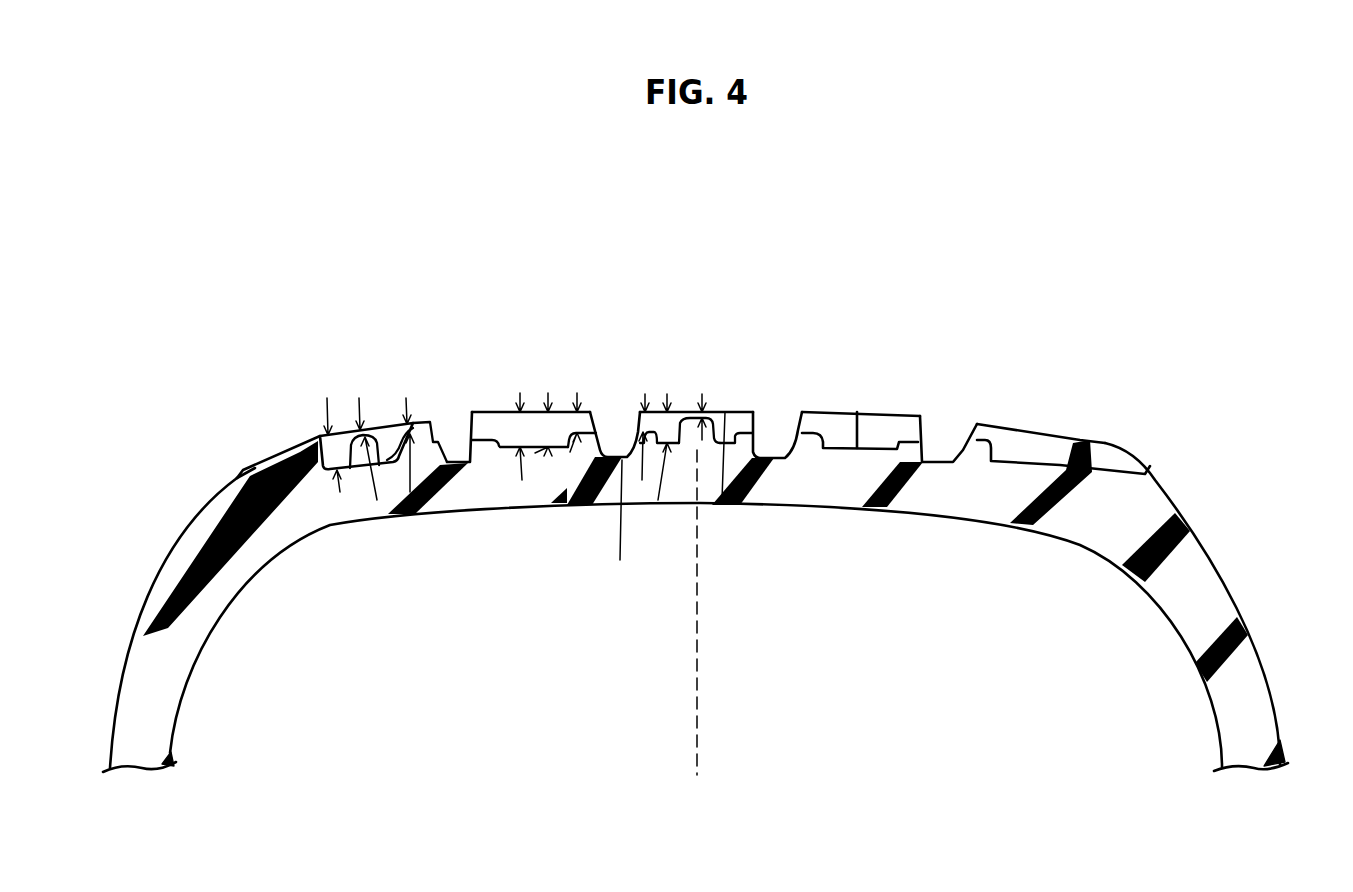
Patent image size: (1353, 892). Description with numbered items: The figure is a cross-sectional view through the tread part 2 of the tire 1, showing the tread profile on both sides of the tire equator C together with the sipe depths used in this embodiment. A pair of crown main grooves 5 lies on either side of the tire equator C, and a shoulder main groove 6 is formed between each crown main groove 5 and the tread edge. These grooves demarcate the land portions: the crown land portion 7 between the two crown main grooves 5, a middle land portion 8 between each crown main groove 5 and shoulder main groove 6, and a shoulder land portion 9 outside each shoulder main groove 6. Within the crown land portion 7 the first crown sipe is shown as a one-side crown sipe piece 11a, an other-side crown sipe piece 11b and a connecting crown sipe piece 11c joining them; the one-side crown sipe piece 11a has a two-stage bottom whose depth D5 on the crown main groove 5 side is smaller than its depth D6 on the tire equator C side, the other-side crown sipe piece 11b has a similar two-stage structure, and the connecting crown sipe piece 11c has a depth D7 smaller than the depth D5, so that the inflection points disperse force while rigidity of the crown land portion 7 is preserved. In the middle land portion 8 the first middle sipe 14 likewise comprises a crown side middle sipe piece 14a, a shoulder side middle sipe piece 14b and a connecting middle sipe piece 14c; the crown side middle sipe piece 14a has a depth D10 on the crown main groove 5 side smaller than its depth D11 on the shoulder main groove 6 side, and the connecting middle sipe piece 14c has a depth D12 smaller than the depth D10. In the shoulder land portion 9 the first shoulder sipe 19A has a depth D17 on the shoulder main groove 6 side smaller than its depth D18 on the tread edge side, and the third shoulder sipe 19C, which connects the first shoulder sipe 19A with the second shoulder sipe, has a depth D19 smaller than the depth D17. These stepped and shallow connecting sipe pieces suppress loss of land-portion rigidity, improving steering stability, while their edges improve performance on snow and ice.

The tire 1 is at (1227, 232).
The tread part 2 is at (1118, 330).
The crown main groove 5 is at (622, 455).
The shoulder main groove 6 is at (440, 440).
The crown land portion 7 is at (639, 400).
The middle land portion 8 is at (600, 398).
The shoulder land portion 9 is at (315, 372).
The first middle sipe 14 is at (593, 327).
The crown side middle sipe piece 14a is at (563, 430).
The shoulder side middle sipe piece 14b is at (477, 417).
The connecting middle sipe piece 14c is at (473, 500).
The one-side crown sipe piece 11a is at (641, 430).
The other-side crown sipe piece 11b is at (738, 424).
The connecting crown sipe piece 11c is at (687, 416).
The first shoulder sipe 19A is at (316, 434).
The third shoulder sipe 19C is at (369, 432).
The depth of one-side crown sipe piece on crown main groove side D5 is at (620, 560).
The depth of one-side crown sipe piece on tire equator side D6 is at (658, 500).
The depth of connecting crown sipe piece D7 is at (722, 500).
The depth of crown side middle sipe piece on crown main groove side D10 is at (570, 452).
The depth of crown side middle sipe piece on shoulder main groove side D11 is at (535, 453).
The depth of connecting middle sipe piece D12 is at (473, 500).
The depth of first shoulder sipe on shoulder main groove side D17 is at (377, 500).
The depth of first shoulder sipe on tread edge side D18 is at (340, 492).
The depth of third shoulder sipe D19 is at (410, 492).
The tire equator C is at (697, 628).